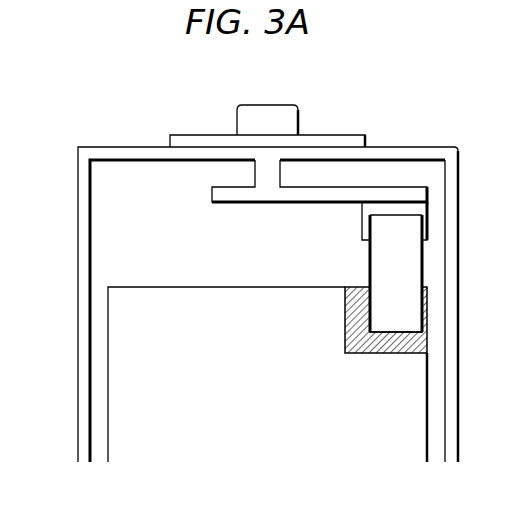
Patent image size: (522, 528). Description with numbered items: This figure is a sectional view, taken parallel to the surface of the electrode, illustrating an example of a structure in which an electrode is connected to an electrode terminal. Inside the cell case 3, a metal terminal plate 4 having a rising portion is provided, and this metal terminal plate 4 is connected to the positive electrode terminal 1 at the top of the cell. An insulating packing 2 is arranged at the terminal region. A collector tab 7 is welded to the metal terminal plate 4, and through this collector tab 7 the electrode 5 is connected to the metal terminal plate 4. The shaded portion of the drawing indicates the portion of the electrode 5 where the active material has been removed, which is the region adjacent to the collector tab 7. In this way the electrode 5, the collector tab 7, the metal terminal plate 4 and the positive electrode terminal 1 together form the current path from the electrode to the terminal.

The positive electrode terminal 1 is at (283, 113).
The insulating packing 2 is at (348, 136).
The cell case 3 is at (450, 187).
The metal terminal plate 4 is at (262, 203).
The electrode 5 is at (138, 362).
The collector tab 7 is at (403, 258).